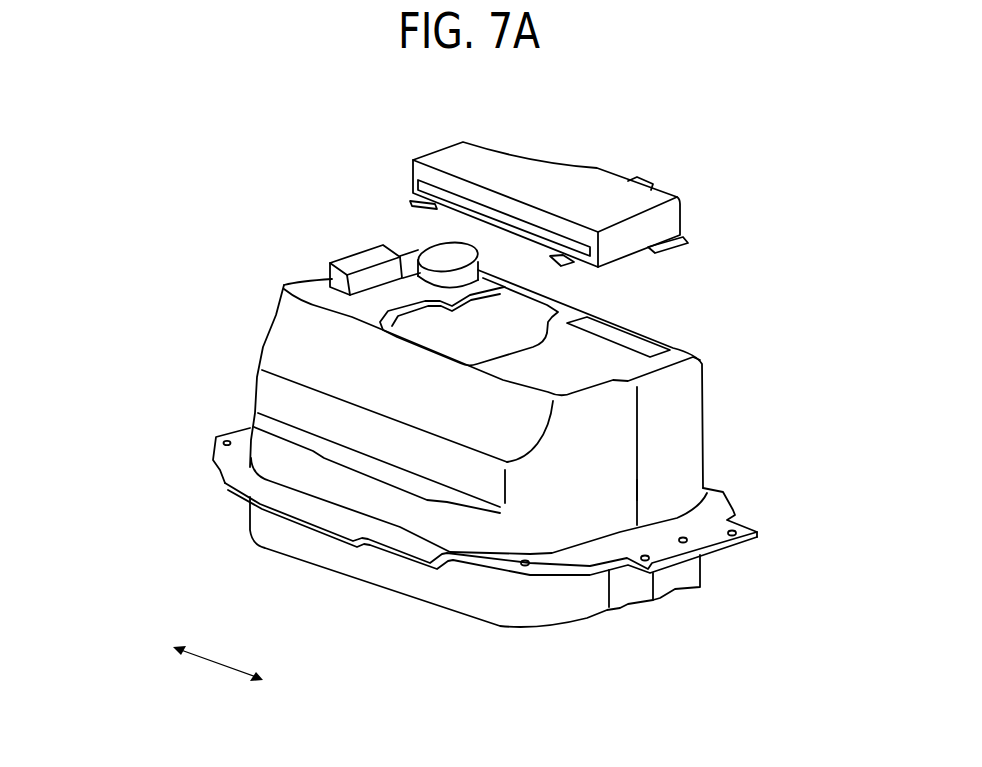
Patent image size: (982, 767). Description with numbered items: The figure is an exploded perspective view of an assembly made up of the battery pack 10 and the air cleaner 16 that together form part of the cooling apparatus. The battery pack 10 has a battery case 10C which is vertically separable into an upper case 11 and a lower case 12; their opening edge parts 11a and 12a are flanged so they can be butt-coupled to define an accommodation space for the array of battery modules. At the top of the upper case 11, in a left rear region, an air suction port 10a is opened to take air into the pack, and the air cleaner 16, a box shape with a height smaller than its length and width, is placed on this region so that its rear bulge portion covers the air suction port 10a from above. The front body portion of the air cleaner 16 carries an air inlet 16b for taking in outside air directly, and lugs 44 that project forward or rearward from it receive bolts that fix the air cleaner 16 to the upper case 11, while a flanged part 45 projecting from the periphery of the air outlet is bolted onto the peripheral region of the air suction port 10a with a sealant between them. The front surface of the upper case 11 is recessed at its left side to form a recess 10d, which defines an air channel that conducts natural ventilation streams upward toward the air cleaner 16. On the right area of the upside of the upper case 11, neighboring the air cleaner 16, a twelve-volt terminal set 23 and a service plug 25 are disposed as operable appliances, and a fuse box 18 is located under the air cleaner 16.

The battery pack 10 is at (722, 428).
The battery case 10C is at (108, 375).
The air suction port 10a is at (627, 340).
The recess 10d is at (624, 461).
The upper case 11 is at (280, 352).
The opening edge part 11a is at (333, 507).
The lower case 12 is at (263, 532).
The opening edge part 12a is at (387, 553).
The air cleaner 16 is at (564, 184).
The air inlet 16b is at (490, 213).
The fuse box 18 is at (538, 306).
The 12-volt terminal set 23 is at (363, 258).
The service plug 25 is at (432, 247).
The lugs 44 is at (558, 266).
The flanged part 45 is at (684, 235).